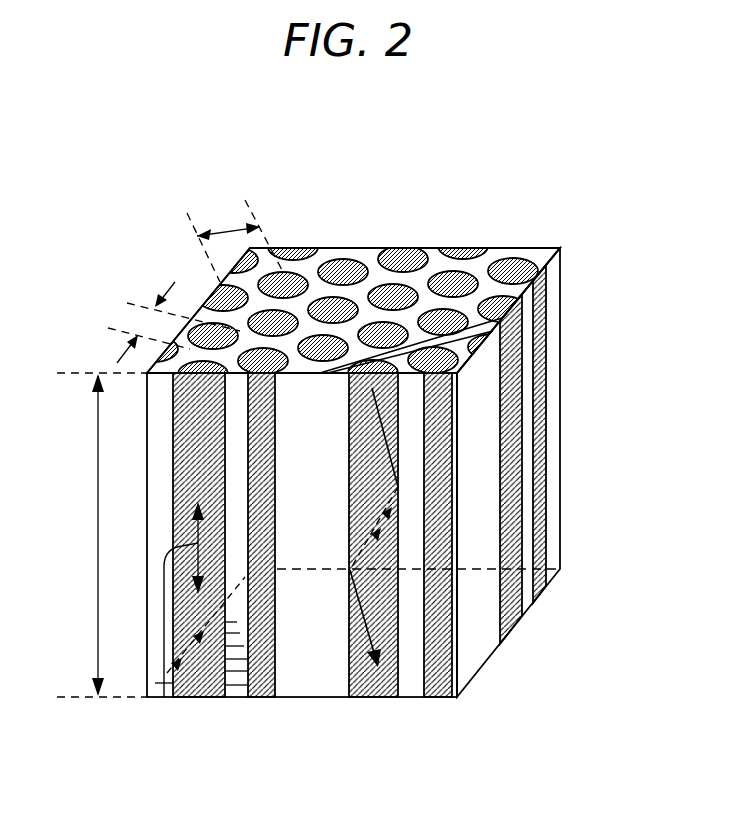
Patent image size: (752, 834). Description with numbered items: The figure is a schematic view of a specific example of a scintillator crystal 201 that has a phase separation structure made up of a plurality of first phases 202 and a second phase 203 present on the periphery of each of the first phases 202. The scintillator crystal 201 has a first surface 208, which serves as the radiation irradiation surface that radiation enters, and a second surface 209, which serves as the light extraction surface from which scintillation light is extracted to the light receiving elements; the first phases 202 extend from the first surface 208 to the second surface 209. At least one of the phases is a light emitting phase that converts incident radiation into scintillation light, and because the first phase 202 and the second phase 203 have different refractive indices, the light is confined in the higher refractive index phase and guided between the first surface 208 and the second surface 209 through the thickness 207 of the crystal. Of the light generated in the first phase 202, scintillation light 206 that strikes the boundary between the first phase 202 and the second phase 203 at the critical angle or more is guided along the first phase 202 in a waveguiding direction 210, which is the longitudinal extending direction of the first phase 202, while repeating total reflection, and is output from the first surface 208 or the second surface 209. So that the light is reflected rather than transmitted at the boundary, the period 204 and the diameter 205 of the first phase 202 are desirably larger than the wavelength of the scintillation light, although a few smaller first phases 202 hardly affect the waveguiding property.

The scintillator crystal 201 is at (545, 247).
The first phase 202 is at (353, 265).
The second phase 203 is at (427, 277).
The period 204 is at (230, 228).
The diameter 205 is at (125, 313).
The scintillation light 206 is at (372, 672).
The thickness 207 is at (94, 535).
The first surface 208 is at (497, 336).
The second surface 209 is at (238, 686).
The waveguiding direction 210 is at (163, 697).